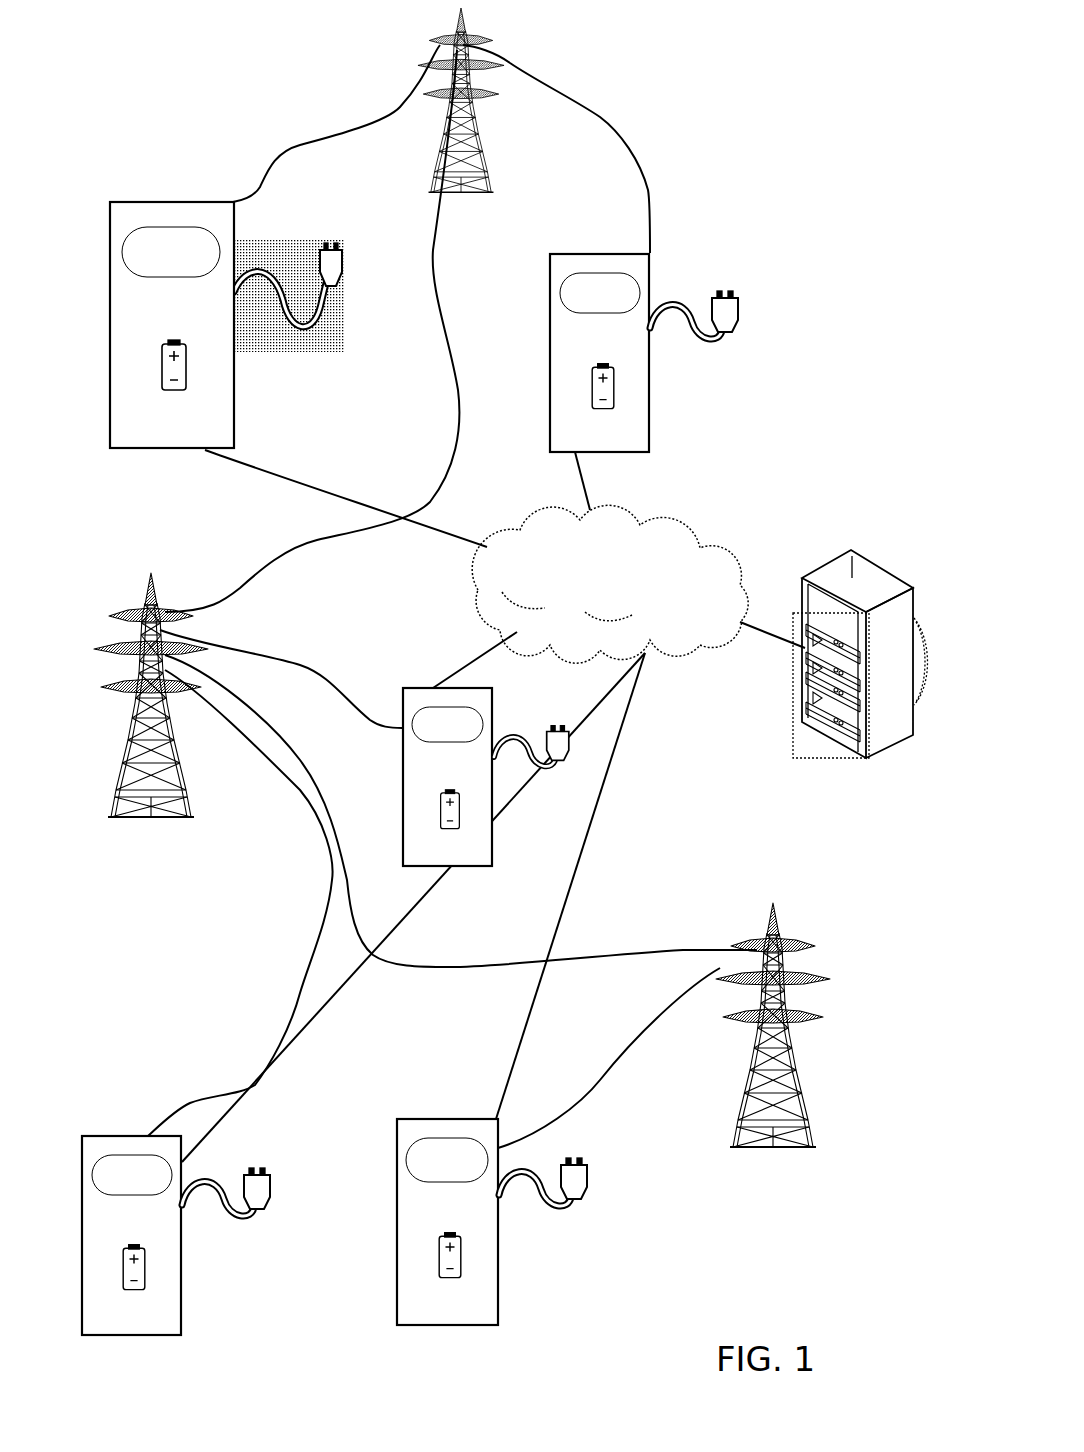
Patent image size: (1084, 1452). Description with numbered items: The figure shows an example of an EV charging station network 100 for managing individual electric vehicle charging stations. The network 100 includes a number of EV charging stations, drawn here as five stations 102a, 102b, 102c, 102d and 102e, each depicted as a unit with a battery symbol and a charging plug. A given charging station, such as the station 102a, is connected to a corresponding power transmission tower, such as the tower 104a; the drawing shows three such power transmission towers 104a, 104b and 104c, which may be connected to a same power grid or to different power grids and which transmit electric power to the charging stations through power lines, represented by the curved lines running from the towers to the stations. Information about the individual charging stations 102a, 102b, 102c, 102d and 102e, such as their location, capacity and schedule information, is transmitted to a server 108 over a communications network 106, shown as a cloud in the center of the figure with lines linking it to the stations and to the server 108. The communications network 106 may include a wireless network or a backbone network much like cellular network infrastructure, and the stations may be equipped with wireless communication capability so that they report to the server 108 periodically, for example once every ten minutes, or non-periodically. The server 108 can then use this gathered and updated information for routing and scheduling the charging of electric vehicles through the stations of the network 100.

The EV charging station network 100 is at (505, 667).
The EV charging station 102a is at (203, 426).
The EV charging station 102b is at (628, 434).
The EV charging station 102c is at (166, 1322).
The EV charging station 102d is at (490, 1312).
The EV charging station 102e is at (470, 777).
The power transmission tower 104a is at (581, 21).
The power transmission tower 104b is at (246, 574).
The power transmission tower 104c is at (867, 904).
The communications network 106 is at (621, 593).
The server 108 is at (820, 572).